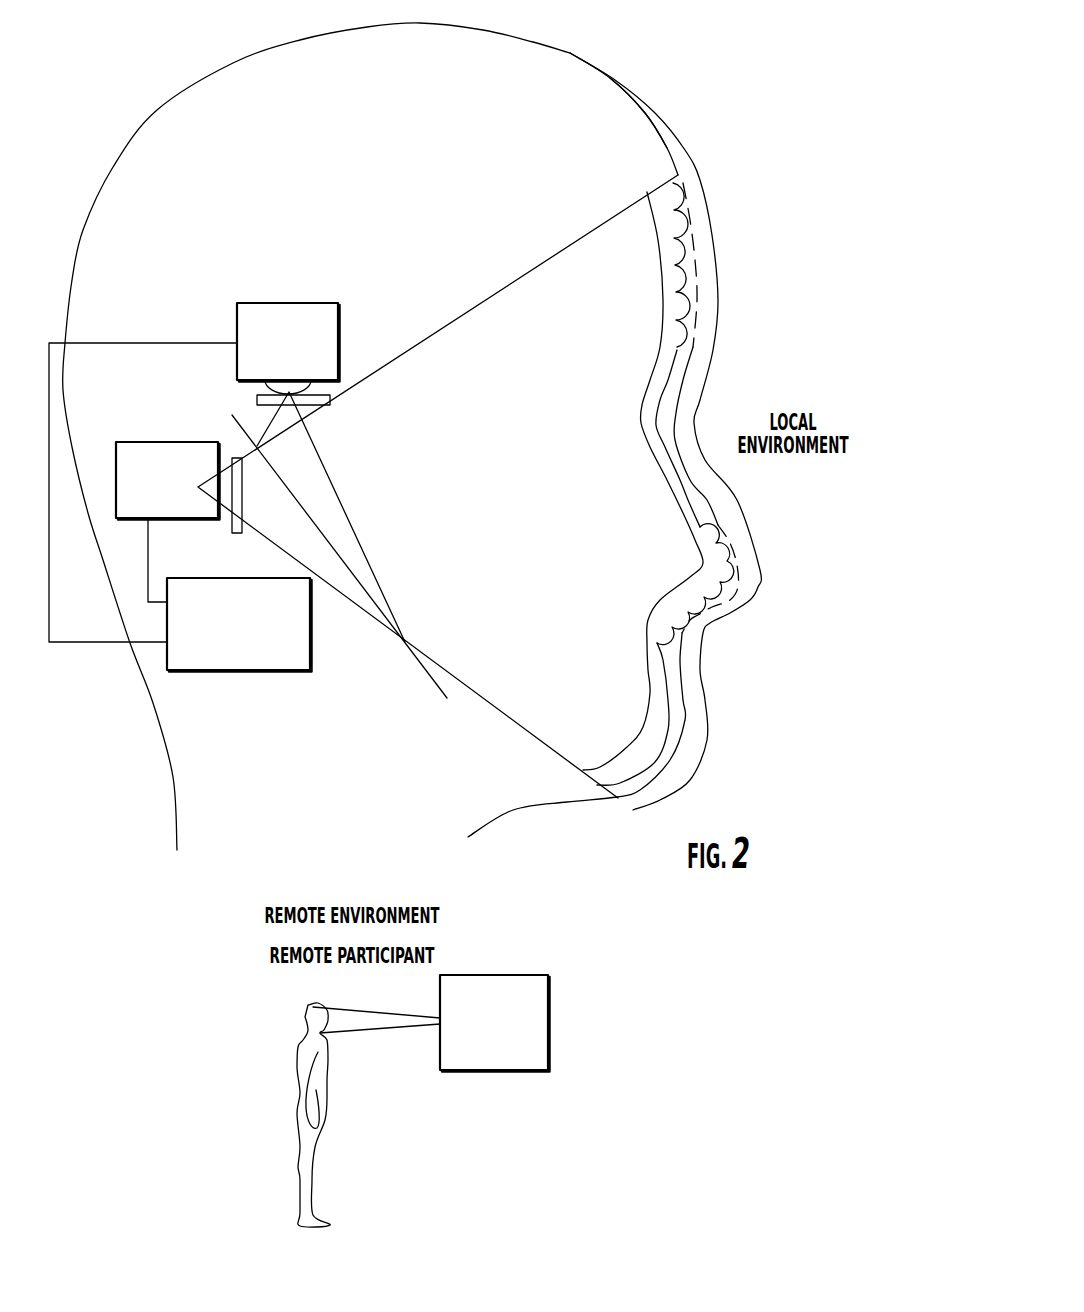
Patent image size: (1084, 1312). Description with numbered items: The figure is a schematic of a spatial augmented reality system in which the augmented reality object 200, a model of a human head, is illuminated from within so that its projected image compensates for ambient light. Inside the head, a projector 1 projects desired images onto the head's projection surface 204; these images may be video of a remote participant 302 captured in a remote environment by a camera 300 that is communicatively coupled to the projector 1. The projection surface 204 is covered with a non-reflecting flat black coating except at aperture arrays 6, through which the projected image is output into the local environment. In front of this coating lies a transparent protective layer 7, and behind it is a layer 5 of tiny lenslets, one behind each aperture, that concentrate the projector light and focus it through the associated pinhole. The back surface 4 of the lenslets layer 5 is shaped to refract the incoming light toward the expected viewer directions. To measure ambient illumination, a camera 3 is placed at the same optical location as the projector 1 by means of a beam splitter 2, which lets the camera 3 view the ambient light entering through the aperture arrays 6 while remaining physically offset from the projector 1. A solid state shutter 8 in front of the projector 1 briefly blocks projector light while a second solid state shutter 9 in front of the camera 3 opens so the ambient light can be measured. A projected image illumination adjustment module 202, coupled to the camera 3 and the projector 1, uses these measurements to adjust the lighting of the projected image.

The augmented reality object 200 is at (232, 64).
The projection surface 204 is at (645, 115).
The projector 1 is at (163, 442).
The beam splitter 2 is at (232, 415).
The camera 3 is at (293, 303).
The back surface 4 is at (648, 213).
The lenslets layer 5 is at (671, 175).
The aperture arrays 6 is at (688, 200).
The transparent protective layer 7 is at (703, 182).
The solid state shutter 8 is at (232, 527).
The solid state shutter 9 is at (330, 400).
The projected image illumination adjustment module 202 is at (240, 578).
The camera 300 is at (548, 1003).
The remote participant 302 is at (302, 1013).